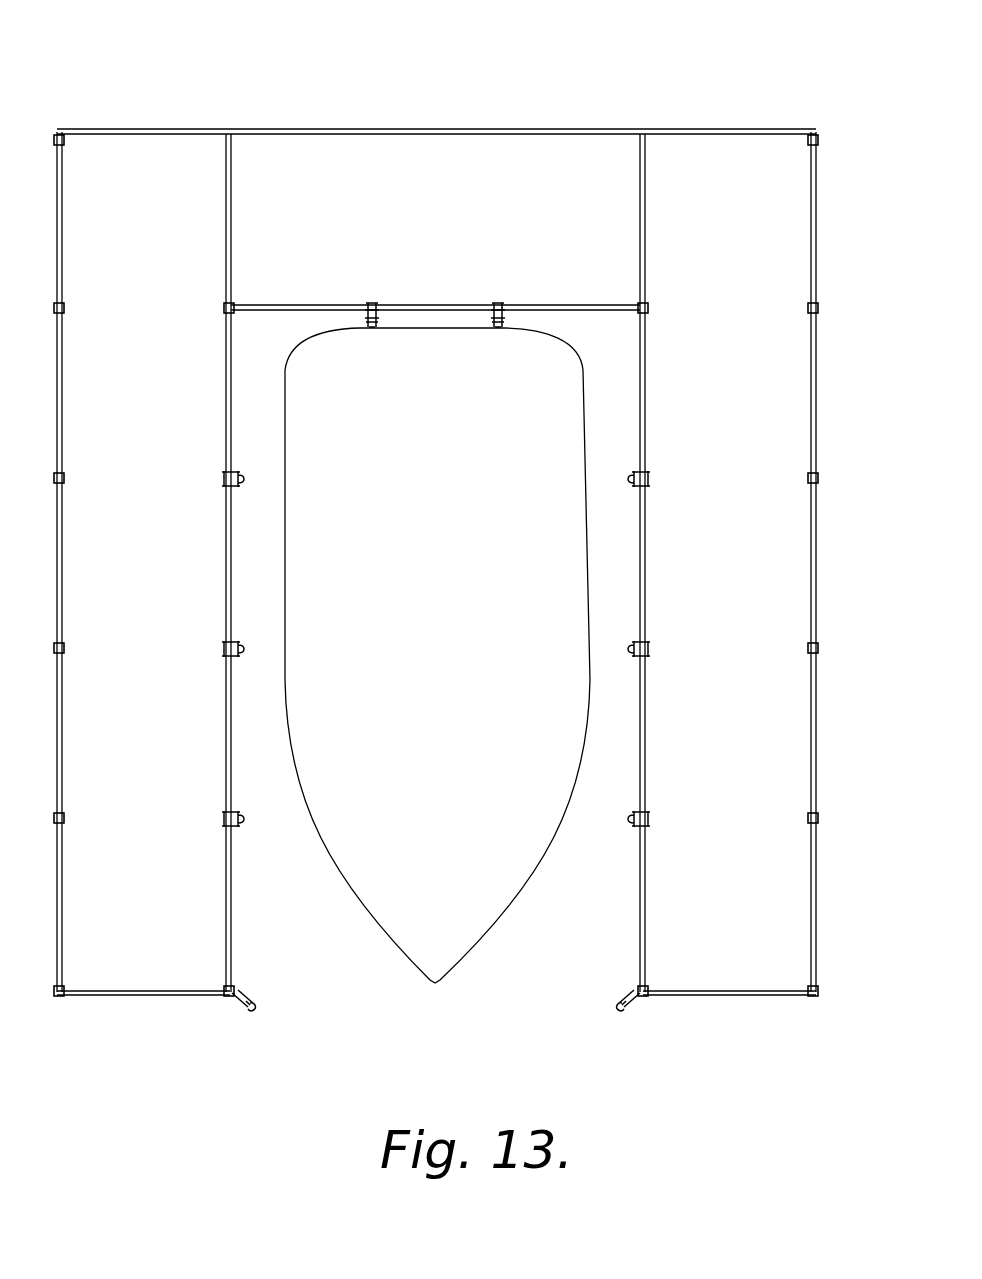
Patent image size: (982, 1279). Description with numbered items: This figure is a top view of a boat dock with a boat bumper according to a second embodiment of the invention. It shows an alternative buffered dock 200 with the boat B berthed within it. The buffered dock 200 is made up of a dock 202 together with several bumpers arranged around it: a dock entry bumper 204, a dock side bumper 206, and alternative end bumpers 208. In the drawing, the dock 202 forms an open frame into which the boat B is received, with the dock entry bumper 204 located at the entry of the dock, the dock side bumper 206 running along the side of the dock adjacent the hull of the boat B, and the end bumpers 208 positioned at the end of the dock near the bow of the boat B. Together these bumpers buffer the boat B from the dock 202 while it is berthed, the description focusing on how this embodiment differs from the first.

The buffered dock 200 is at (478, 88).
The dock 202 is at (620, 128).
The dock entry bumper 204 is at (238, 1002).
The dock side bumper 206 is at (240, 822).
The end bumpers 208 is at (505, 310).
The boat B is at (327, 862).